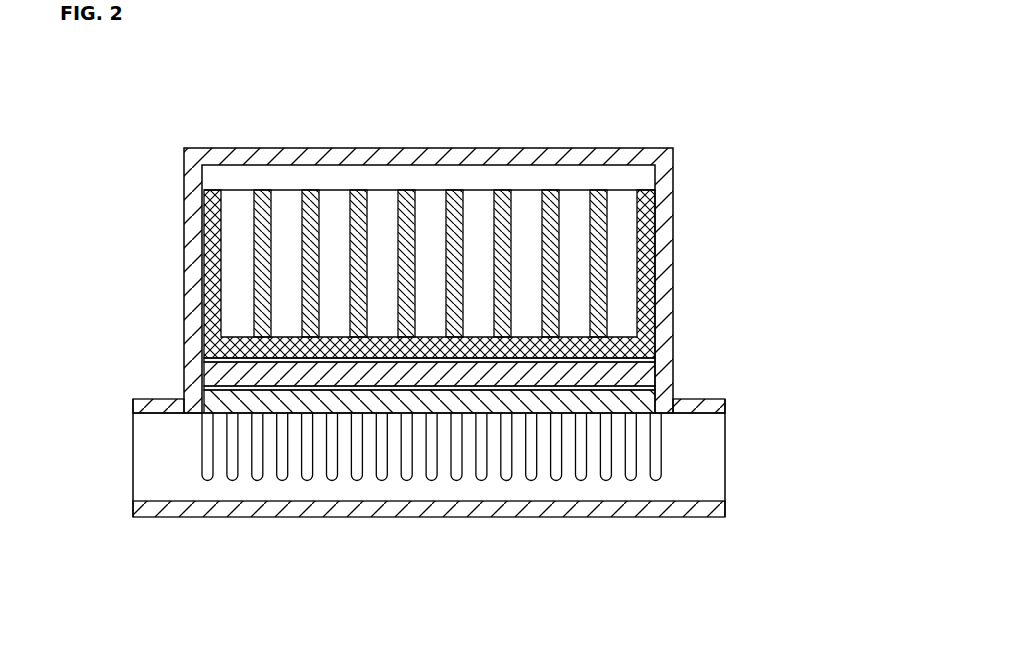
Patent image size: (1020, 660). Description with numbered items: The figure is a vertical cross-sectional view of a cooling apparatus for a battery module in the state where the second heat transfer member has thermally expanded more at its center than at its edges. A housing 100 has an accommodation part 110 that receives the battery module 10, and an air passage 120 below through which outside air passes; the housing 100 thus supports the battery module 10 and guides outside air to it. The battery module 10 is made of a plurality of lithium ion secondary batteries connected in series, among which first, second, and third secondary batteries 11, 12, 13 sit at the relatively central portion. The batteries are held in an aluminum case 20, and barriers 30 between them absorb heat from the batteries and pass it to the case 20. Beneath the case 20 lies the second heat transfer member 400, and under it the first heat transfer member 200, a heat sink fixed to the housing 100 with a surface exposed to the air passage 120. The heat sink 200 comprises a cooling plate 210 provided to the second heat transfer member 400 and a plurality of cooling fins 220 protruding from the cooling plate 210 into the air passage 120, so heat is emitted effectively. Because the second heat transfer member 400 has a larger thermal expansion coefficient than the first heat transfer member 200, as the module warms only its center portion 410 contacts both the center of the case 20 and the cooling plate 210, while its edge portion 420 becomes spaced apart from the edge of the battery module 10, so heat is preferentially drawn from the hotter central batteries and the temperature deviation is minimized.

The housing 100 is at (470, 338).
The accommodation part 110 is at (668, 254).
The air passage 120 is at (707, 456).
The battery module 10 is at (380, 205).
The first secondary battery 11 is at (431, 190).
The second secondary battery 12 is at (382, 190).
The third secondary battery 13 is at (476, 190).
The case 20 is at (210, 350).
The barriers 30 is at (303, 293).
The first heat transfer member 200 is at (431, 519).
The cooling plate 210 is at (398, 400).
The cooling fins 220 is at (462, 457).
The second heat transfer member 400 is at (470, 474).
The center portion 410 is at (452, 377).
The edge portion 420 is at (512, 385).